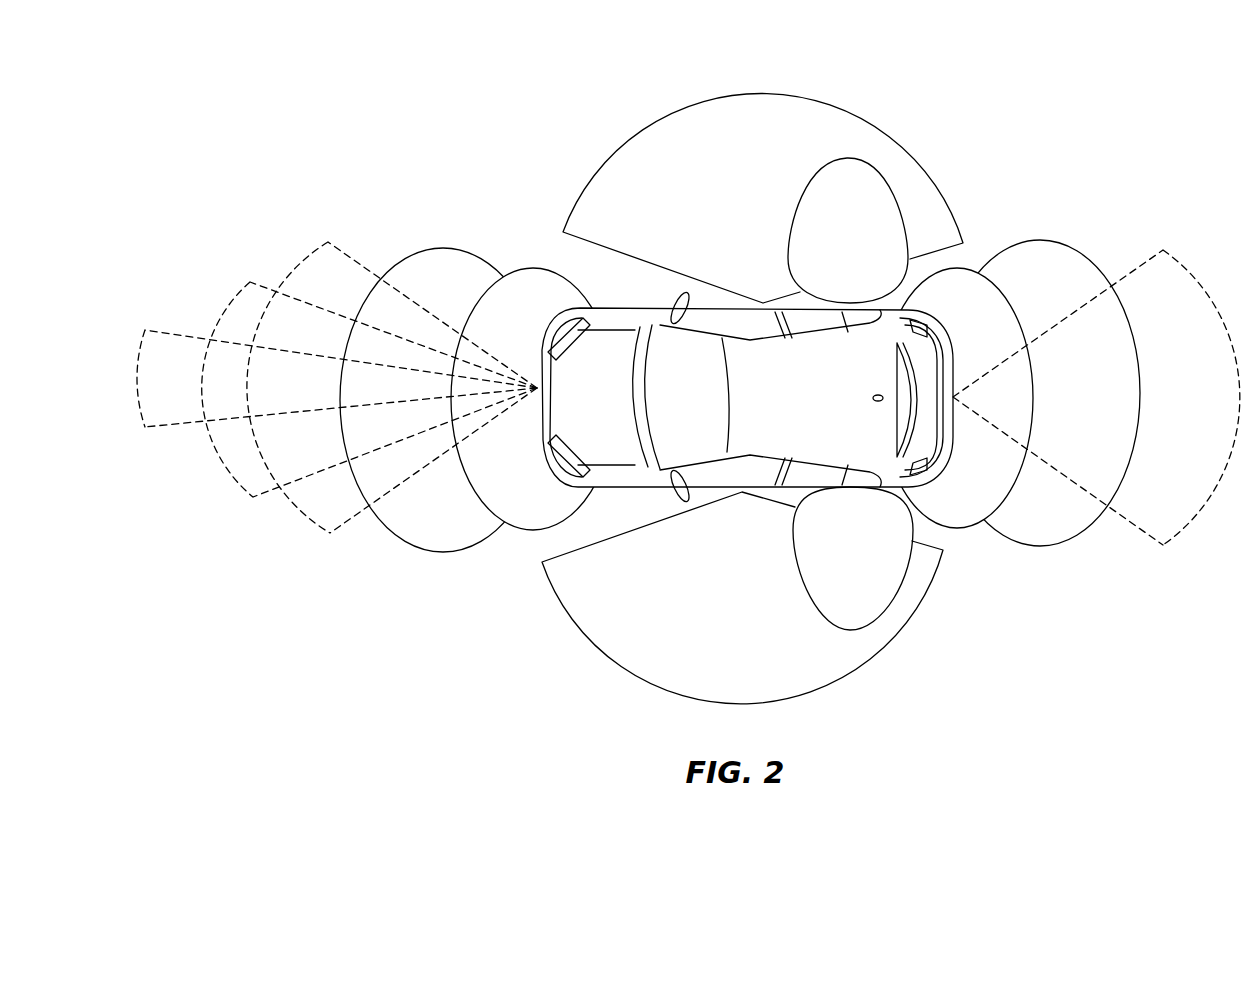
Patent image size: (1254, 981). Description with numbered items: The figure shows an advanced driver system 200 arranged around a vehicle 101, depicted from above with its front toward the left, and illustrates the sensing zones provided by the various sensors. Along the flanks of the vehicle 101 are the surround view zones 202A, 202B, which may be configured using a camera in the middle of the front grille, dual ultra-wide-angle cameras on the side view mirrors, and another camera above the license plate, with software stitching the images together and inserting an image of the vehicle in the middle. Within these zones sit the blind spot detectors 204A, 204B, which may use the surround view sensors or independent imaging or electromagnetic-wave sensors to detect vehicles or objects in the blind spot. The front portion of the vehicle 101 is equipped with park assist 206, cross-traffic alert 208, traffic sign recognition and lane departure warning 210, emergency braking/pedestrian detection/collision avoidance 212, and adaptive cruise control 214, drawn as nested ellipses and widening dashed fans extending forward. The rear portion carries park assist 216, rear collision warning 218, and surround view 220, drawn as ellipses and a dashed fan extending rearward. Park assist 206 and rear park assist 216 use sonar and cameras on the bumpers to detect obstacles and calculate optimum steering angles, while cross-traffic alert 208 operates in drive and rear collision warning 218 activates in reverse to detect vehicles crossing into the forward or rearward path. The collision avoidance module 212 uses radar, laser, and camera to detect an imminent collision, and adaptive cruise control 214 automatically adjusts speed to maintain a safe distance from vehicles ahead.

The advanced driver system 200 is at (971, 84).
The vehicle 101 is at (747, 397).
The surround view 202A is at (763, 198).
The surround view 202B is at (742, 598).
The blind spot detector 204A is at (848, 230).
The blind spot detector 204B is at (853, 558).
The park assist 206 is at (537, 268).
The cross-traffic alert 208 is at (447, 248).
The traffic sign recognition and lane departure warning 210 is at (331, 537).
The emergency braking/pedestrian detection/collision avoidance 212 is at (257, 283).
The adaptive cruise control 214 is at (148, 432).
The park assist 216 is at (980, 263).
The rear collision warning 218 is at (1037, 548).
The surround view 220 is at (1148, 258).